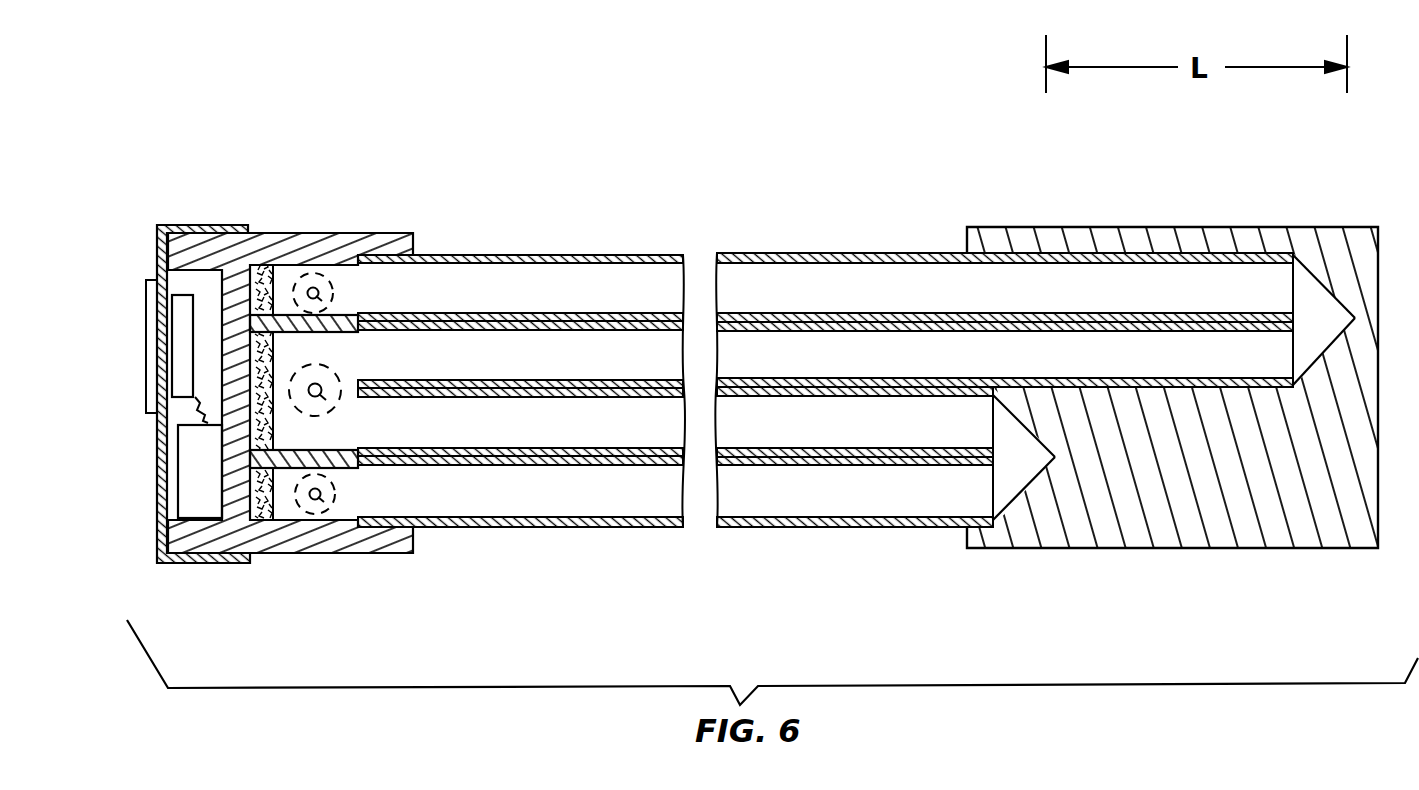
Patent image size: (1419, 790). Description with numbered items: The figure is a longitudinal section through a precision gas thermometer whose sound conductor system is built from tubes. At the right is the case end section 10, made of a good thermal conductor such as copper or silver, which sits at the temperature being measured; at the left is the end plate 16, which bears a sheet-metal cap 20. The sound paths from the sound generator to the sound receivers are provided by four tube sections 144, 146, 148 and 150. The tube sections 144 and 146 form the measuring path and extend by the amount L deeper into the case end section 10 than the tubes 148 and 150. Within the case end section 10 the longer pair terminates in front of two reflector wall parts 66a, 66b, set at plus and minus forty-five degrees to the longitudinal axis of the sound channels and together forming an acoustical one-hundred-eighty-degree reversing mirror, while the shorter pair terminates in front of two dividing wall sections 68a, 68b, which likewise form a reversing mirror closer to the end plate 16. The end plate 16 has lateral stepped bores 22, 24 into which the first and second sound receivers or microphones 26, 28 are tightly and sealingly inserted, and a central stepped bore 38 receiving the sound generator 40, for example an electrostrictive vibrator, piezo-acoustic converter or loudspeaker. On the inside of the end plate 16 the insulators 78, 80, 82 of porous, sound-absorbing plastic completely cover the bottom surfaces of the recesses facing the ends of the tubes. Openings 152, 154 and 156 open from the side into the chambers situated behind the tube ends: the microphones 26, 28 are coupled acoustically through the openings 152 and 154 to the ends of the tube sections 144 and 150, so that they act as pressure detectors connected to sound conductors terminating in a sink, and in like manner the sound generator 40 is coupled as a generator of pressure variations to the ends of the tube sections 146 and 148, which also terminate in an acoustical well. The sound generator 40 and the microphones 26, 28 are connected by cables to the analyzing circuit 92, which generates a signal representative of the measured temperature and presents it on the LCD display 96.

The case end section 10 is at (1027, 230).
The end plate 16 is at (273, 250).
The cap 20 is at (225, 227).
The lateral stepped bore 22 is at (379, 257).
The lateral stepped bore 24 is at (290, 515).
The first sound receiver 26 is at (333, 294).
The second sound receiver 28 is at (333, 496).
The central stepped bore 38 is at (335, 334).
The sound generator 40 is at (330, 380).
The insulator 78 is at (290, 280).
The insulator 80 is at (257, 520).
The insulator 82 is at (328, 444).
The analyzing circuit 92 is at (202, 493).
The LCD display 96 is at (177, 310).
The tube section 144 is at (747, 287).
The tube section 146 is at (833, 350).
The tube section 148 is at (782, 432).
The tube section 150 is at (848, 503).
The opening 152 is at (328, 300).
The opening 154 is at (328, 508).
The opening 156 is at (330, 425).
The reflector wall part 66a is at (1320, 292).
The reflector wall part 66b is at (1325, 337).
The dividing wall section 68a is at (1043, 440).
The dividing wall section 68b is at (1015, 480).